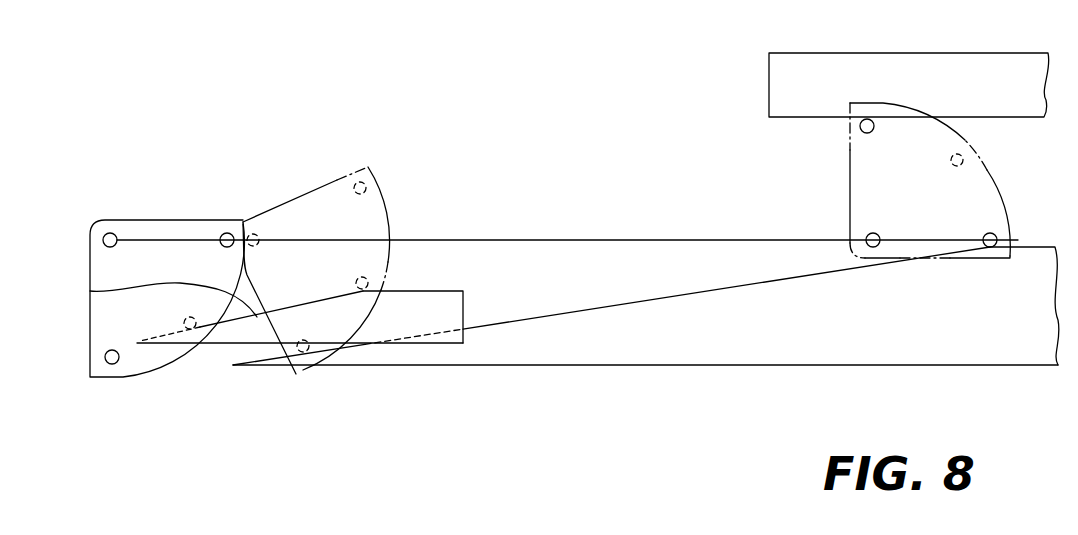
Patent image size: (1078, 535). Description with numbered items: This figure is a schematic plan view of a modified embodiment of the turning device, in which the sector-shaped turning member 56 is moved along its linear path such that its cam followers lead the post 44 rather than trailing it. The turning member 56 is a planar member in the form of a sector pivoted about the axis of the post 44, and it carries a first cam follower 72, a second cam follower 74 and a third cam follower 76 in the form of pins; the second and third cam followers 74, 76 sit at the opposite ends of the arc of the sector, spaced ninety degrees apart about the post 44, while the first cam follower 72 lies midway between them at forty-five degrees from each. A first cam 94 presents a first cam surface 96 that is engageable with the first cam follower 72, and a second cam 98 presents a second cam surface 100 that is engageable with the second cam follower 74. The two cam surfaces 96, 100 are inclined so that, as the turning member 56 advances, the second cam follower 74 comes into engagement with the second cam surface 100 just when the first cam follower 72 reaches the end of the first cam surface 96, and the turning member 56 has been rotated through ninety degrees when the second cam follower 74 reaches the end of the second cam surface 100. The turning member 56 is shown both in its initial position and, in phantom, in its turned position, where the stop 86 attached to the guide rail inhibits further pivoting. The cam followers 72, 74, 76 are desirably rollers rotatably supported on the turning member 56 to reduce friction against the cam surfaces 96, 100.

The post 44 is at (110, 232).
The turning member 56 is at (160, 218).
The first cam follower 72 is at (197, 332).
The second cam follower 74 is at (111, 364).
The third cam follower 76 is at (226, 232).
The stop 86 is at (1008, 65).
The first cam 94 is at (438, 298).
The first cam surface 96 is at (90, 291).
The second cam 98 is at (785, 344).
The second cam surface 100 is at (707, 290).